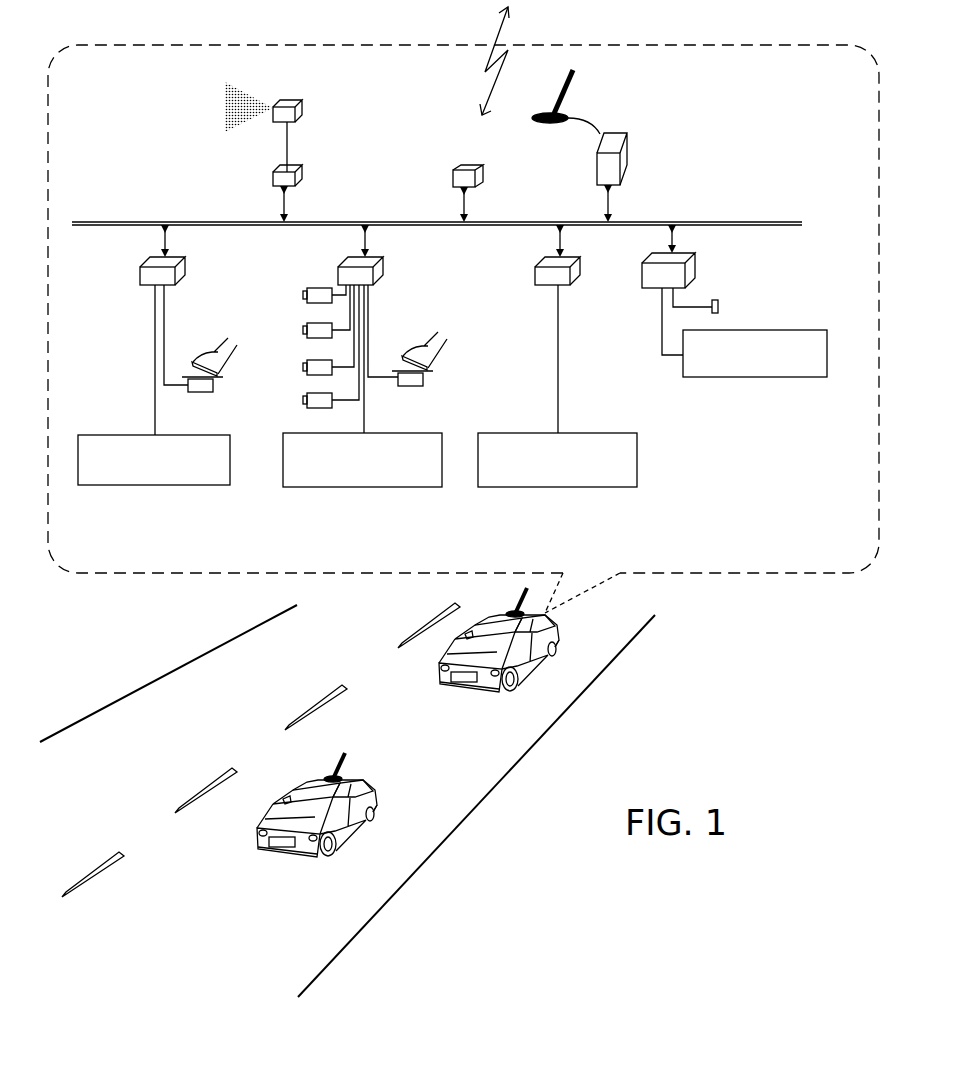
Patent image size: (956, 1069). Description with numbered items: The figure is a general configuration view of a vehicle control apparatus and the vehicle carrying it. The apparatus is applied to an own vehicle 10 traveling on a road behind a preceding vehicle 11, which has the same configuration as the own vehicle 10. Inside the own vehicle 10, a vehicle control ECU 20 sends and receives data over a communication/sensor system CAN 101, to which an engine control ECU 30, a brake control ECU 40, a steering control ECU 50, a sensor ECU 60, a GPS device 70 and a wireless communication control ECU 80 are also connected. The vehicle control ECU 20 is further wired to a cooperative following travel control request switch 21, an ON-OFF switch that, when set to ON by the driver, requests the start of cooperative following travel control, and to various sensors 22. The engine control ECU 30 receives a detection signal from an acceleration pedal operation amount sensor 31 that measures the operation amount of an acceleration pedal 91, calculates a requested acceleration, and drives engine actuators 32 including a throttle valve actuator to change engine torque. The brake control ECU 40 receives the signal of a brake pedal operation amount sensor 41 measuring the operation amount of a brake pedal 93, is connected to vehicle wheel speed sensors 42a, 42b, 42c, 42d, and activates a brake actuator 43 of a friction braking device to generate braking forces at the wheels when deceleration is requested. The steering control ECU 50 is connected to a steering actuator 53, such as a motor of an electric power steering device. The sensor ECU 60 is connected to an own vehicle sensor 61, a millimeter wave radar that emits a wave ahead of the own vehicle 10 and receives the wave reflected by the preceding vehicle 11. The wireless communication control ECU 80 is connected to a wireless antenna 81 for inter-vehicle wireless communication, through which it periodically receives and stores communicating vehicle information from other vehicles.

The own vehicle 10 is at (533, 655).
The preceding vehicle 11 is at (353, 823).
The vehicle control ECU 20 is at (693, 253).
The cooperative following travel control request switch 21 is at (720, 307).
The various sensors 22 is at (827, 355).
The engine control ECU 30 is at (178, 258).
The acceleration pedal operation amount sensor 31 is at (200, 392).
The engine actuators 32 is at (142, 486).
The brake control ECU 40 is at (378, 258).
The brake pedal operation amount sensor 41 is at (407, 386).
The vehicle wheel speed sensor 42a is at (303, 295).
The vehicle wheel speed sensor 42b is at (303, 330).
The vehicle wheel speed sensor 42c is at (303, 367).
The vehicle wheel speed sensor 42d is at (303, 400).
The brake actuator 43 is at (360, 488).
The steering control ECU 50 is at (574, 258).
The steering actuator 53 is at (580, 488).
The sensor ECU 60 is at (292, 165).
The own vehicle sensor 61 is at (285, 100).
The GPS device 70 is at (468, 165).
The wireless communication control ECU 80 is at (627, 153).
The wireless antenna 81 is at (577, 90).
The acceleration pedal 91 is at (193, 362).
The brake pedal 93 is at (403, 356).
The communication/sensor system CAN 101 is at (420, 221).